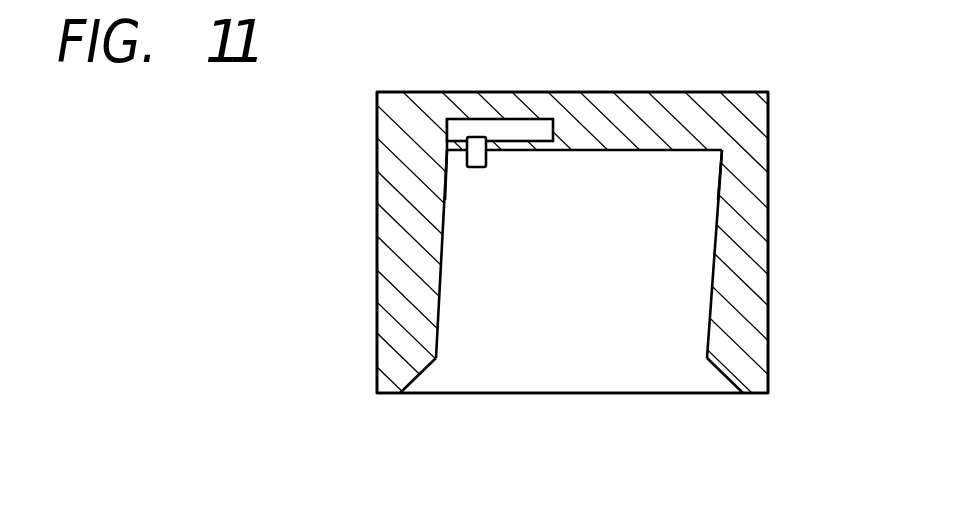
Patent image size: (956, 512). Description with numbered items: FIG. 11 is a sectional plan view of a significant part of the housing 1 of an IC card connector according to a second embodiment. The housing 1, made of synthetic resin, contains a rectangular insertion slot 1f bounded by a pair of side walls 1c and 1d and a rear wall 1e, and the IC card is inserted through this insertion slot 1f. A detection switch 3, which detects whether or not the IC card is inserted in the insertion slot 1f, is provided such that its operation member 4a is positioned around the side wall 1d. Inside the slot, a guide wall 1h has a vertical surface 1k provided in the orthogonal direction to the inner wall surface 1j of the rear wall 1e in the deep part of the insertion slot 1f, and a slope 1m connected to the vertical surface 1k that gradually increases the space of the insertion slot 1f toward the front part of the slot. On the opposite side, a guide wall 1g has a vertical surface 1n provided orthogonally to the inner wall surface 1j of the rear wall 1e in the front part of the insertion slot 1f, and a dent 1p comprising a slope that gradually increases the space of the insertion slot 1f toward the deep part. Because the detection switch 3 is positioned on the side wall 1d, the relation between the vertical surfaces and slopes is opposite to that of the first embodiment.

The housing 1 is at (700, 84).
The side wall 1c is at (760, 186).
The side wall 1d is at (378, 213).
The rear wall 1e is at (635, 100).
The insertion slot 1f is at (613, 362).
The guide wall 1g is at (708, 250).
The guide wall 1h is at (450, 260).
The inner wall surface 1j is at (628, 151).
The vertical surface 1k is at (450, 182).
The slope 1m is at (440, 328).
The vertical surface 1n is at (706, 343).
The dent 1p is at (714, 193).
The detection switch 3 is at (503, 114).
The operation member 4a is at (487, 163).